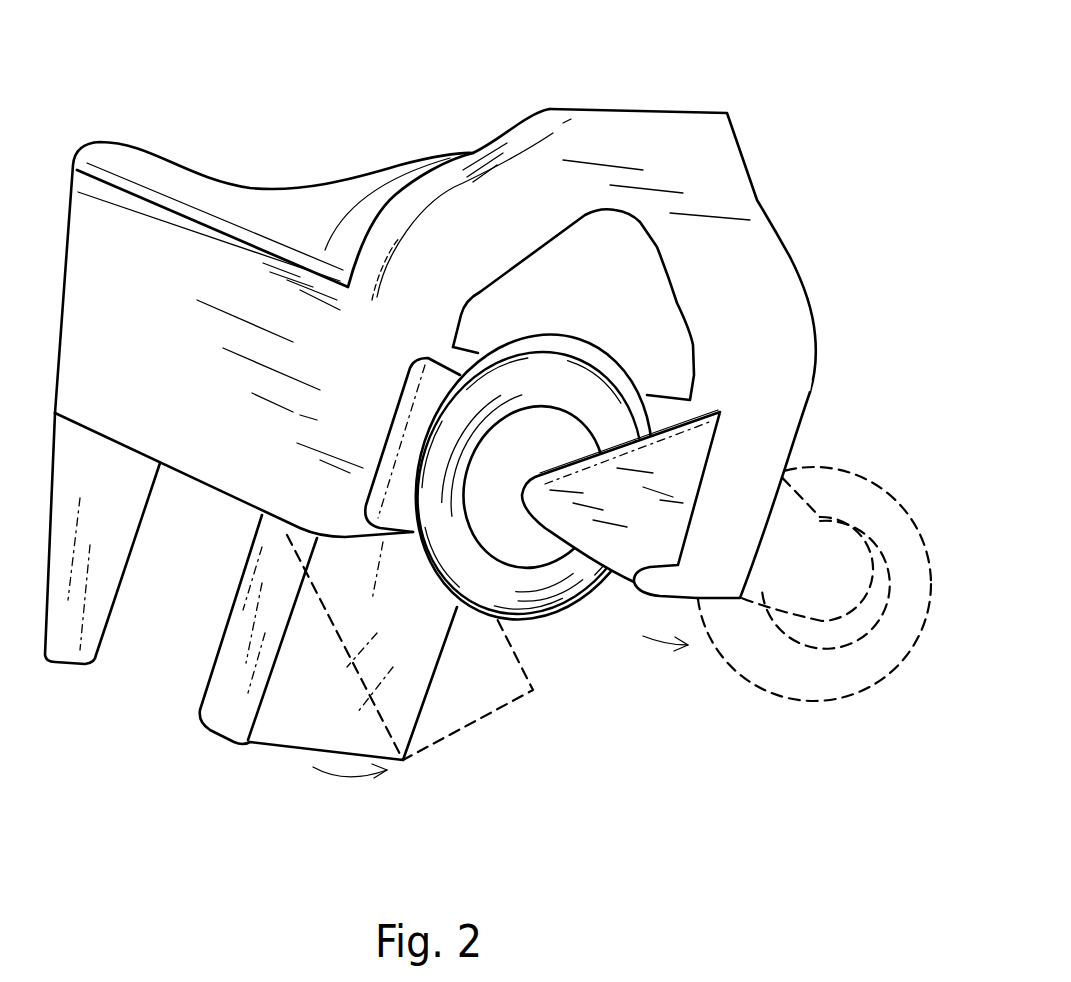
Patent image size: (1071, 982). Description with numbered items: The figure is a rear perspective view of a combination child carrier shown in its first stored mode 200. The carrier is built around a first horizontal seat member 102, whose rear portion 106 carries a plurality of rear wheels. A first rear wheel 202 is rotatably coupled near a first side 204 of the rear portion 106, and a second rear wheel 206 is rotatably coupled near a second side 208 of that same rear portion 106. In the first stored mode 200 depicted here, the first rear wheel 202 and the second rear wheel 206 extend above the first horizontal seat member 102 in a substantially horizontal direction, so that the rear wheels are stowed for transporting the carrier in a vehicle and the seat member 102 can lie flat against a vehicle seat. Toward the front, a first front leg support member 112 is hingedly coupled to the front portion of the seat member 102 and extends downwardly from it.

The first stored mode 200 is at (338, 96).
The first horizontal seat member 102 is at (192, 392).
The rear portion 106 is at (780, 197).
The first side 204 is at (830, 350).
The second rear wheel 206 is at (575, 347).
The first rear wheel 202 is at (545, 607).
The second side 208 is at (245, 520).
The first front leg support member 112 is at (230, 710).